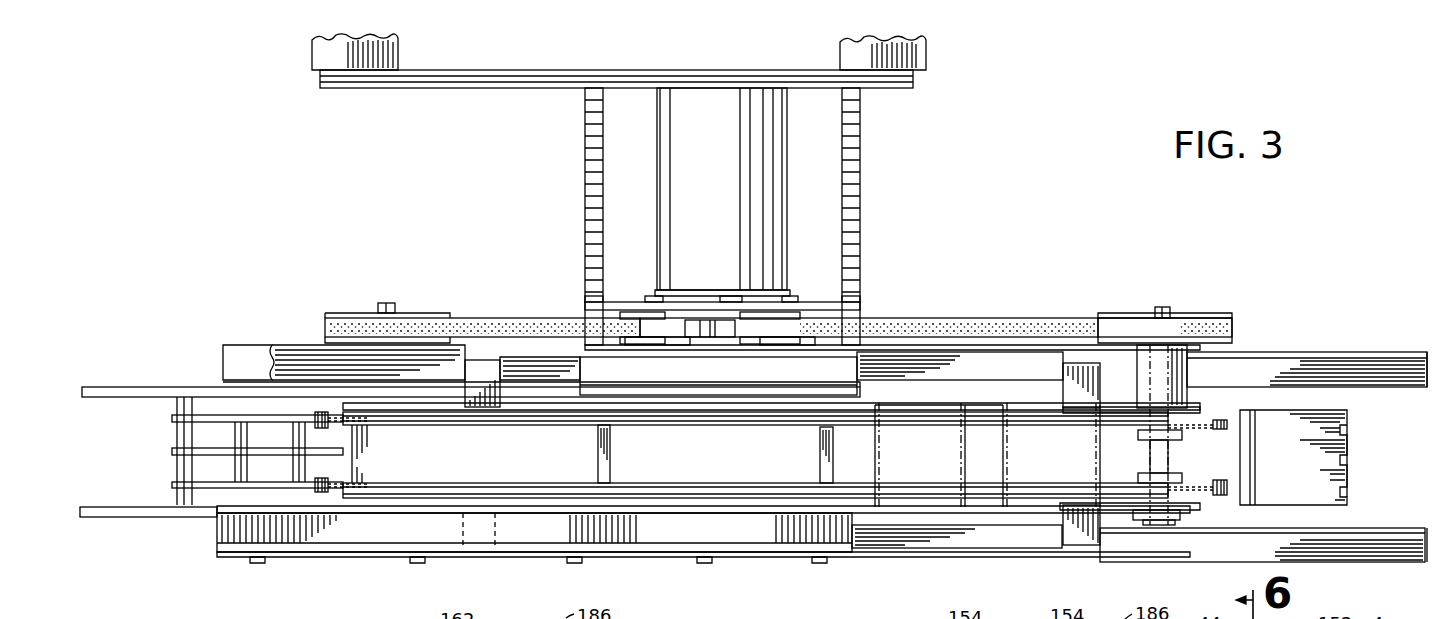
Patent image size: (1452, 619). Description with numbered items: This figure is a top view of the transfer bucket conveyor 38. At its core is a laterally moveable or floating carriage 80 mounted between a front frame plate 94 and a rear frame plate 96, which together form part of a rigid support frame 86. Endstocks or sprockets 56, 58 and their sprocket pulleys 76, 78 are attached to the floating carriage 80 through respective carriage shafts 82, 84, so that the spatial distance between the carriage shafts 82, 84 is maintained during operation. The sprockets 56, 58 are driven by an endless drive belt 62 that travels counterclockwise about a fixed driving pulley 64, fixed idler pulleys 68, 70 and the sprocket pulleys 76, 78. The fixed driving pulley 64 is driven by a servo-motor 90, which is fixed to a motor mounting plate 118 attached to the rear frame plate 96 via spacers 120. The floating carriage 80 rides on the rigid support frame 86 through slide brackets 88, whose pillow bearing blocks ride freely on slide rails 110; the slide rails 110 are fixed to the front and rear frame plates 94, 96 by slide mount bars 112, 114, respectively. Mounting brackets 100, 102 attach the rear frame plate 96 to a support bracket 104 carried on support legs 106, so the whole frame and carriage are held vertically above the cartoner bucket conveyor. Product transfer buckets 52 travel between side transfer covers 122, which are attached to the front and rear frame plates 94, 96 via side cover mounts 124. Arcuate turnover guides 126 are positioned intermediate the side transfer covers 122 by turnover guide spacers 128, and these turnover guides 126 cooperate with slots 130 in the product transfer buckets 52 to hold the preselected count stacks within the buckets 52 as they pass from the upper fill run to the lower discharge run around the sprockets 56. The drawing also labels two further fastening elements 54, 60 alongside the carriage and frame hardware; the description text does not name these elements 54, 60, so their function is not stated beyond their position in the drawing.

The transfer bucket conveyor 38 is at (1152, 226).
The product transfer buckets 52 is at (878, 460).
The nut 54 is at (318, 493).
The endstock or sprocket 56 is at (360, 485).
The endstock or sprocket 58 is at (1196, 482).
The lower nut 60 is at (1228, 485).
The endless drive belt 62 is at (938, 320).
The fixed driving pulley 64 is at (713, 345).
The fixed idler pulley 68 is at (800, 345).
The fixed idler pulley 70 is at (628, 345).
The sprocket pulley 76 is at (340, 313).
The sprocket pulley 78 is at (1215, 318).
The floating carriage 80 is at (985, 405).
The carriage shaft 82 is at (388, 303).
The carriage shaft 84 is at (1162, 307).
The rigid support frame 86 is at (1345, 352).
The slide brackets 88 is at (480, 358).
The servo-motor 90 is at (716, 203).
The front frame plate 94 is at (765, 558).
The rear frame plate 96 is at (870, 347).
The mounting bracket 100 is at (585, 152).
The mounting bracket 102 is at (860, 152).
The support bracket 104 is at (522, 70).
The support legs 106 is at (318, 62).
The slide rails 110 is at (1360, 387).
The slide mount bar 112 is at (1362, 545).
The slide mount bar 114 is at (1255, 365).
The motor mounting plate 118 is at (622, 302).
The spacers 120 is at (595, 318).
The side transfer covers 122 is at (95, 387).
The side cover mounts 124 is at (230, 362).
The arcuate turnover guides 126 is at (203, 420).
The turnover guide spacers 128 is at (172, 432).
The slots 130 is at (1350, 487).